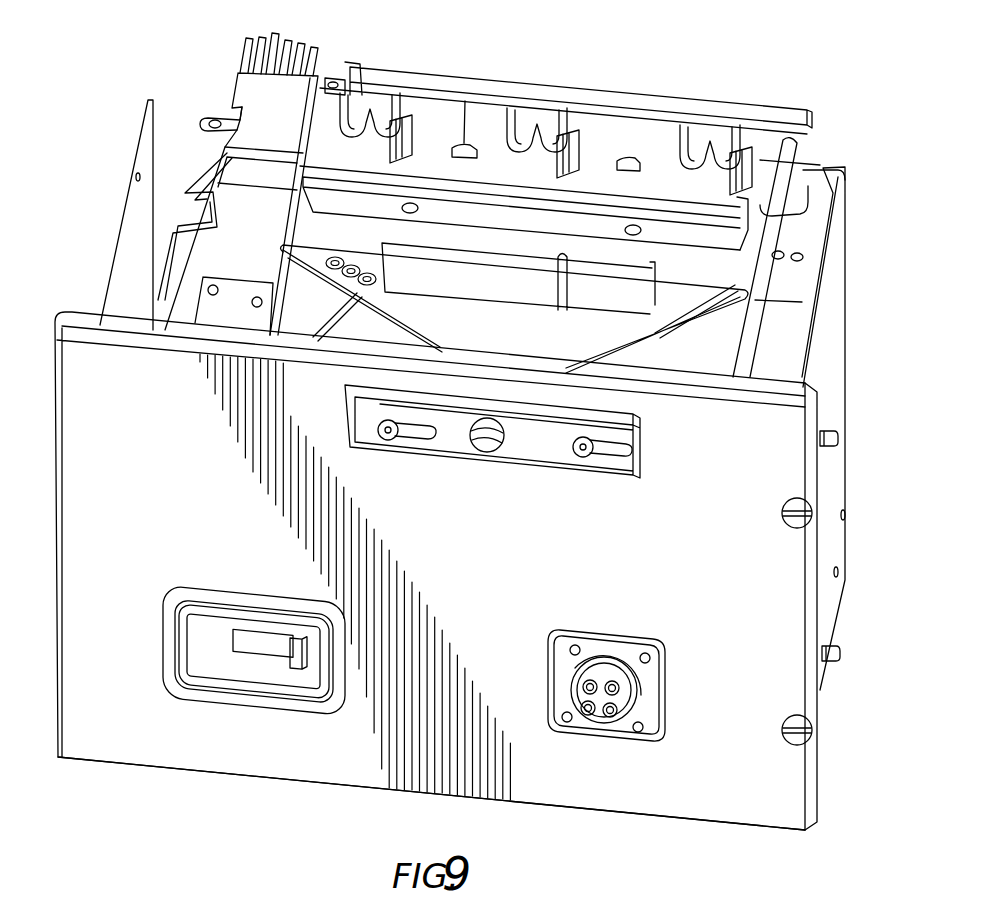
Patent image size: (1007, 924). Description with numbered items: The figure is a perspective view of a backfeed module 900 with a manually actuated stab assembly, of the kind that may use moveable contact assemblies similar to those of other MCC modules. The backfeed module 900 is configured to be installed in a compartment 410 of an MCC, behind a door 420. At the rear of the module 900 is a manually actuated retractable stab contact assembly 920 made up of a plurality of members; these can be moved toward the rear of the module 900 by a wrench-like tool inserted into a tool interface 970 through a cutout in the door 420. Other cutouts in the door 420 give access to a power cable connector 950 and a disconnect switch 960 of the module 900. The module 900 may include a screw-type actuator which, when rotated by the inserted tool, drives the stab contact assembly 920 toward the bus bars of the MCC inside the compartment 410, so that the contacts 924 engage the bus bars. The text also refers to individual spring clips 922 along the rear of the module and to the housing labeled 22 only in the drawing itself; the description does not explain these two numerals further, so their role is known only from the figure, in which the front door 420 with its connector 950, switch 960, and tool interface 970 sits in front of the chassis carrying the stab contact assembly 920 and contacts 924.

The power supply housing 22 is at (166, 815).
The compartment 410 is at (188, 94).
The door 420 is at (88, 360).
The backfeed module 900 is at (733, 88).
The retractable stab contact assembly 920 is at (748, 238).
The spring clips 922 is at (563, 127).
The contacts 924 is at (535, 82).
The power cable connector 950 is at (648, 692).
The disconnect switch 960 is at (267, 646).
The tool interface 970 is at (482, 455).